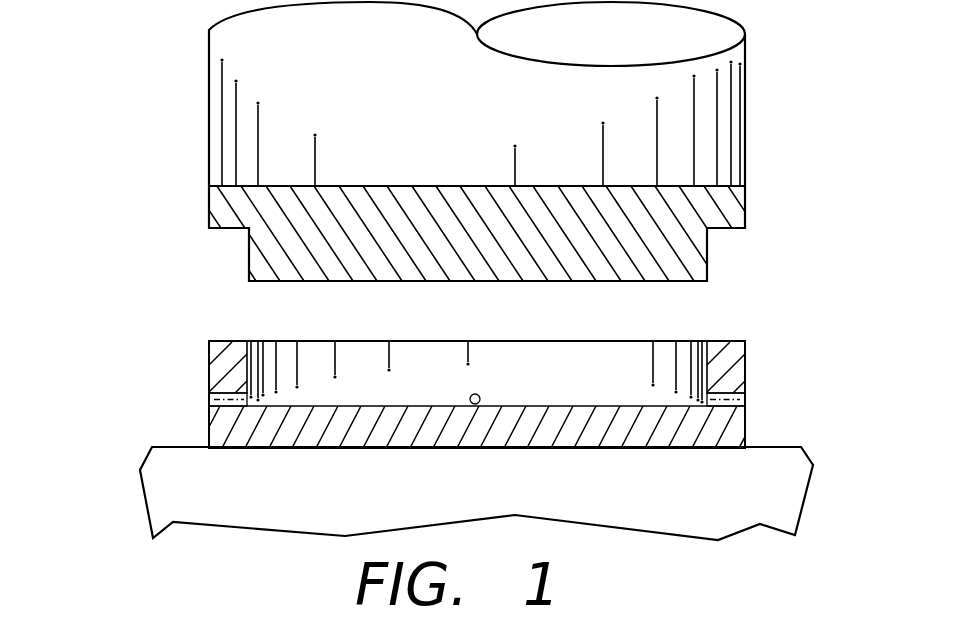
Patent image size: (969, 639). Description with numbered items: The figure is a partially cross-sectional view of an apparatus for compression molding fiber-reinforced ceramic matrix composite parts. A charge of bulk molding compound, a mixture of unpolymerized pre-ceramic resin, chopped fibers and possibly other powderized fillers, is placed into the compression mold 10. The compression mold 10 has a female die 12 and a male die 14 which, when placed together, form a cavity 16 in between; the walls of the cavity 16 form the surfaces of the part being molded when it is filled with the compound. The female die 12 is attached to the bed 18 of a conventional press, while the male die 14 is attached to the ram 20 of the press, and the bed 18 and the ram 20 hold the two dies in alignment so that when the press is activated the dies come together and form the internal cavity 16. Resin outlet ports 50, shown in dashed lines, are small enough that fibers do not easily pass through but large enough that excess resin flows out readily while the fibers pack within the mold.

The compression mold 10 is at (195, 189).
The female die 12 is at (738, 363).
The male die 14 is at (724, 206).
The cavity 16 is at (605, 360).
The bed 18 is at (738, 512).
The ram 20 is at (723, 137).
The resin outlet ports 50 is at (215, 398).